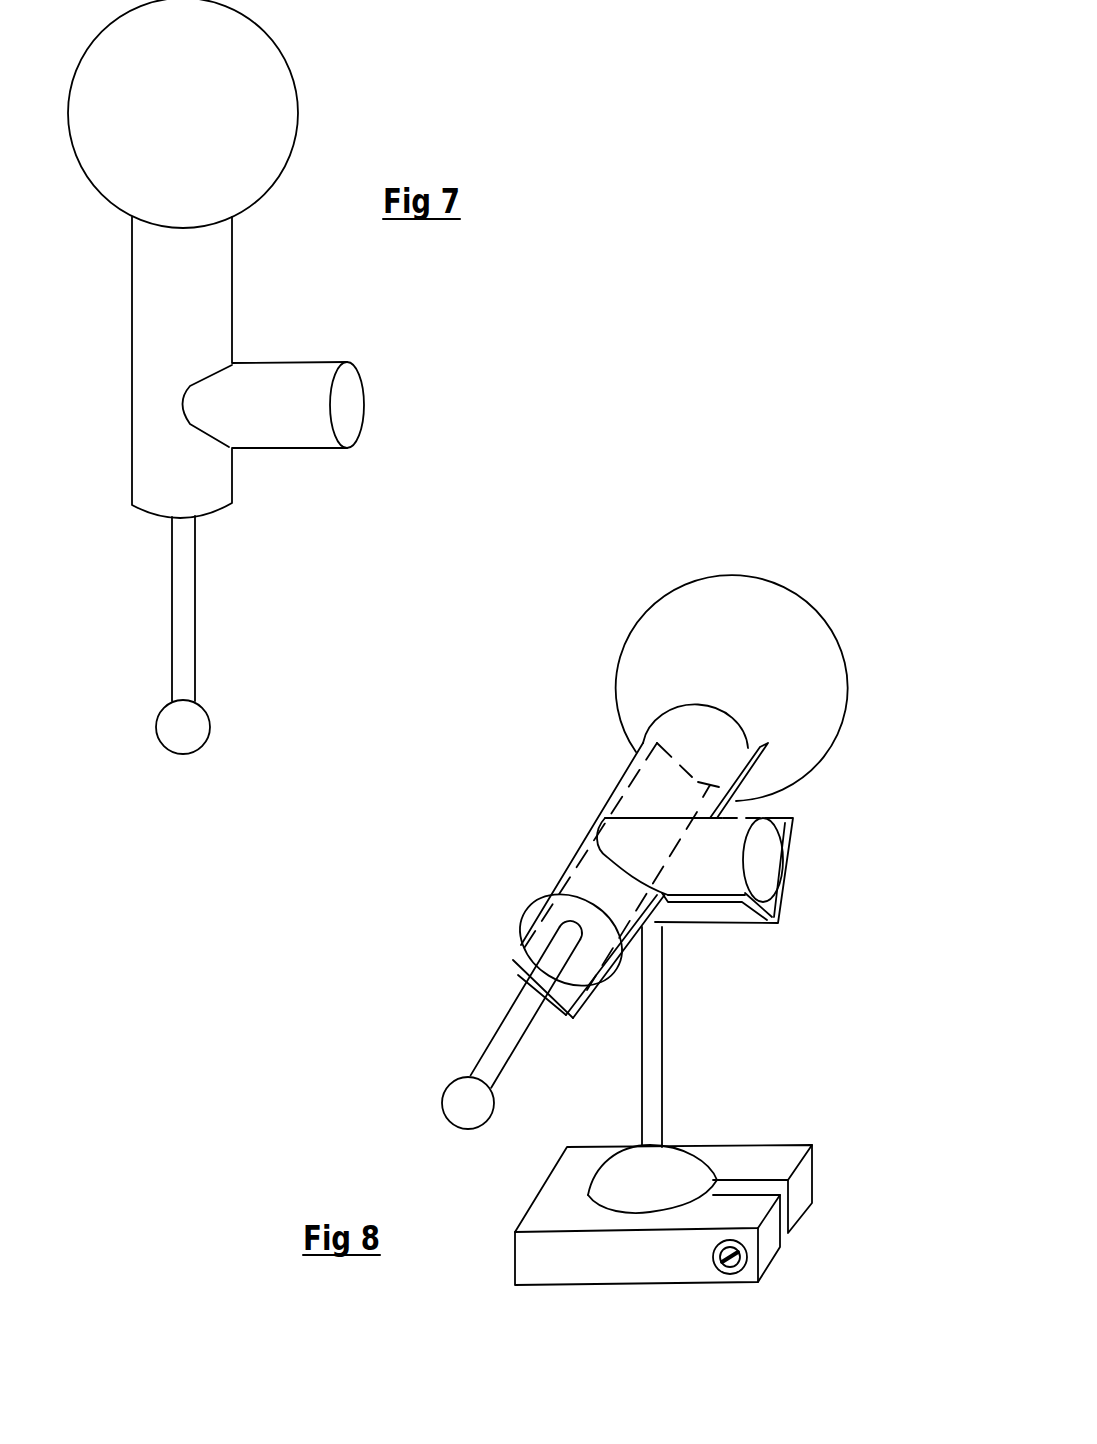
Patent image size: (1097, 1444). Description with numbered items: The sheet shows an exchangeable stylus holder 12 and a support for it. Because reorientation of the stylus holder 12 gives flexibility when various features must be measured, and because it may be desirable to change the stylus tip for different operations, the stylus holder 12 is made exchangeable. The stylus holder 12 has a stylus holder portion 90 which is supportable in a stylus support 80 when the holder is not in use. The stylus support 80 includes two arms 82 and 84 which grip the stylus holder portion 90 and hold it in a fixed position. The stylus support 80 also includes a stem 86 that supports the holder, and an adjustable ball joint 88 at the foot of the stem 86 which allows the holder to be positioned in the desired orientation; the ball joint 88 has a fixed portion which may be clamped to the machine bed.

In FIG. 7, the stylus holder 12 is at (244, 377).
In FIG. 8, the stylus holder 12 is at (626, 852).
In FIG. 7, the stylus holder portion 90 is at (157, 384).
In FIG. 8, the stylus holder portion 90 is at (586, 835).
In FIG. 8, the stylus support 80 is at (718, 1014).
In FIG. 8, the arm 82 is at (788, 860).
In FIG. 8, the arm 84 is at (516, 992).
In FIG. 8, the stem 86 is at (648, 1050).
In FIG. 8, the adjustable ball joint 88 is at (731, 1103).